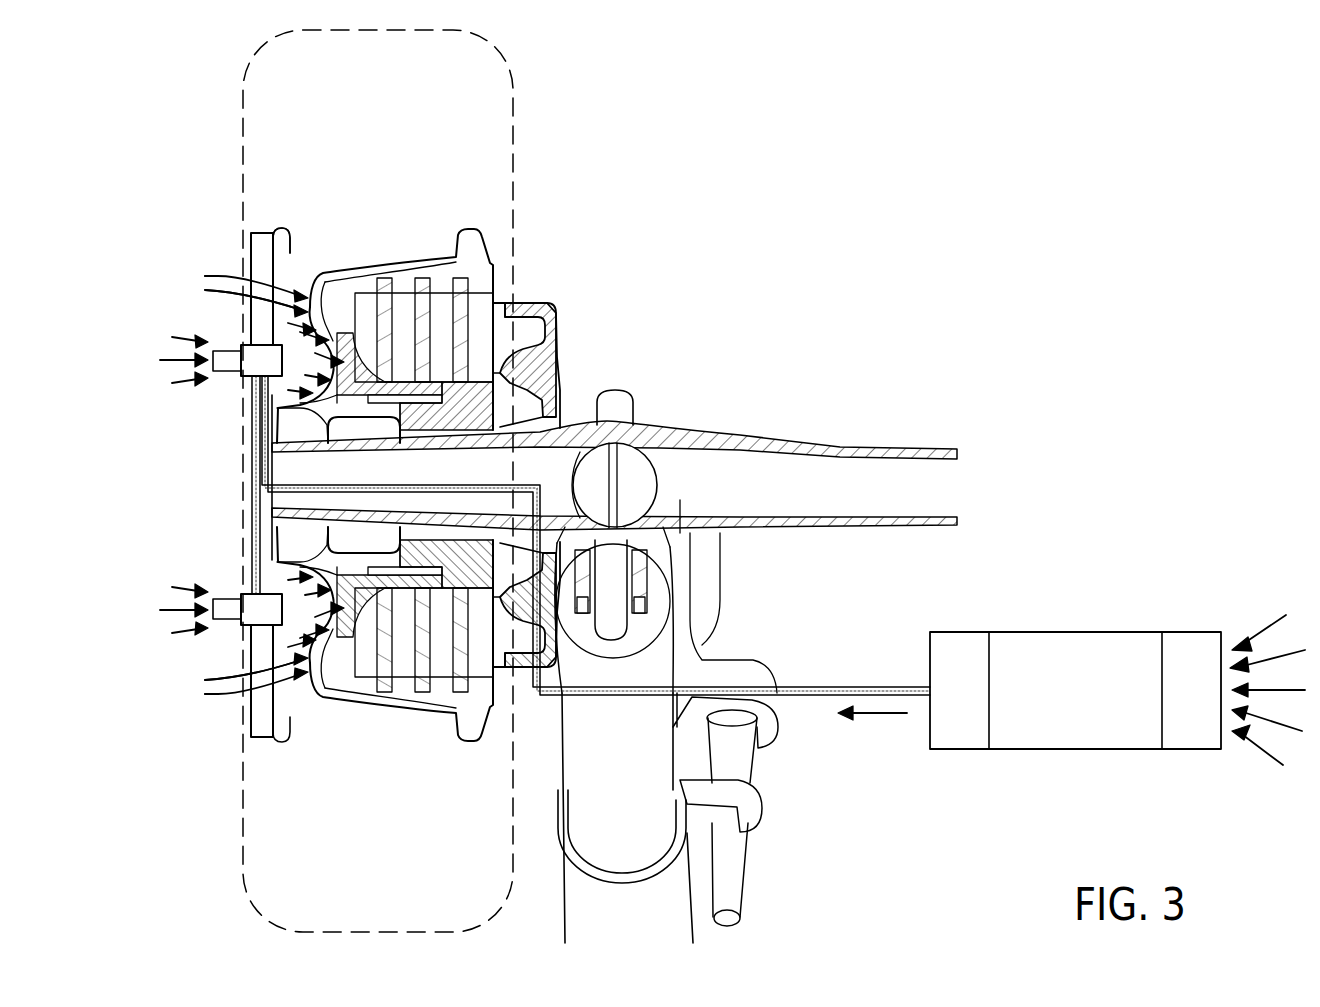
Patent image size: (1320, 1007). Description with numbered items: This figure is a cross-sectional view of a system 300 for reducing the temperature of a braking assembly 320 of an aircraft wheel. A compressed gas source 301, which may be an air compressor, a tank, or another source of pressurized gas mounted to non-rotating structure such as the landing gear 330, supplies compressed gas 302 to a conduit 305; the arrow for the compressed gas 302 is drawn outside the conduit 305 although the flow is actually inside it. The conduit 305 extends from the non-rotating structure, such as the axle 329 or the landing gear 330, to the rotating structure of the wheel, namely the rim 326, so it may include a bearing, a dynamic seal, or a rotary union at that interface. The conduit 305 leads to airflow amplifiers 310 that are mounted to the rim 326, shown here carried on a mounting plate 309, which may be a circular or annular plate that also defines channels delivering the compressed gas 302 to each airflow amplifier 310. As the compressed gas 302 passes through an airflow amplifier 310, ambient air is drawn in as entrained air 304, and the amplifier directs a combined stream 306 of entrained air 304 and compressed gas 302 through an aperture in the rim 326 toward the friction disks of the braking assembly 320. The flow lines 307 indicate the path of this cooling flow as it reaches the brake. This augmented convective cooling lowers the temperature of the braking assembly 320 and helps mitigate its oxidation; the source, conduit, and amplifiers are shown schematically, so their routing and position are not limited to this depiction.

The system for reducing a temperature of a braking assembly 300 is at (772, 204).
The compressed gas source 301 is at (1097, 733).
The compressed gas 302 is at (887, 713).
The entrained air 304 is at (168, 360).
The conduit 305 is at (254, 463).
The combined stream 306 is at (314, 302).
The cooling air flow 307 is at (205, 276).
The mounting plate 309 is at (260, 246).
The airflow amplifier 310 is at (240, 350).
The braking assembly 320 is at (515, 287).
The rim 326 is at (295, 262).
The axle 329 is at (690, 440).
The landing gear 330 is at (792, 870).